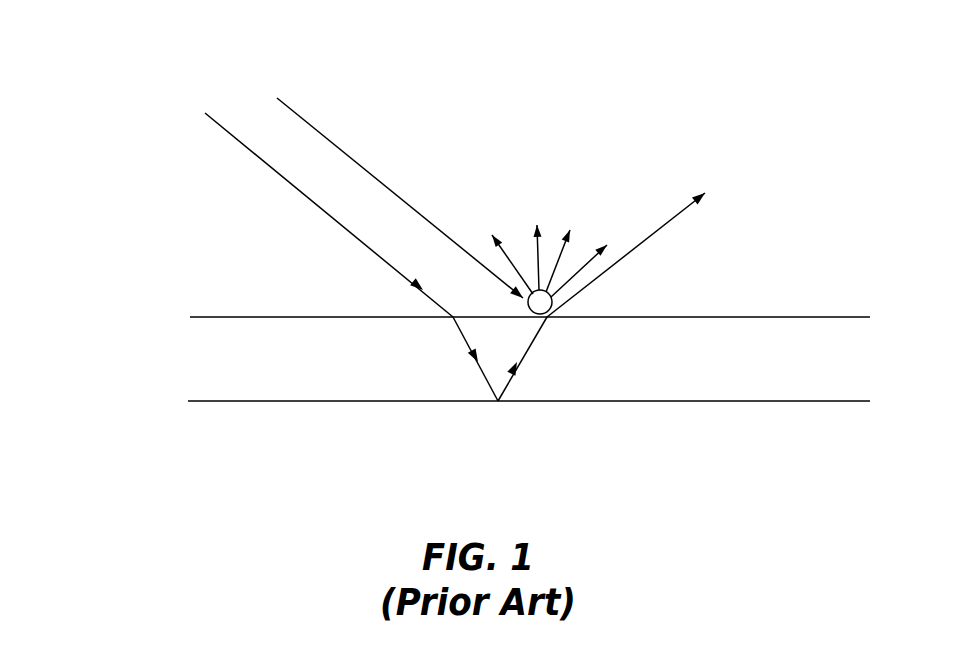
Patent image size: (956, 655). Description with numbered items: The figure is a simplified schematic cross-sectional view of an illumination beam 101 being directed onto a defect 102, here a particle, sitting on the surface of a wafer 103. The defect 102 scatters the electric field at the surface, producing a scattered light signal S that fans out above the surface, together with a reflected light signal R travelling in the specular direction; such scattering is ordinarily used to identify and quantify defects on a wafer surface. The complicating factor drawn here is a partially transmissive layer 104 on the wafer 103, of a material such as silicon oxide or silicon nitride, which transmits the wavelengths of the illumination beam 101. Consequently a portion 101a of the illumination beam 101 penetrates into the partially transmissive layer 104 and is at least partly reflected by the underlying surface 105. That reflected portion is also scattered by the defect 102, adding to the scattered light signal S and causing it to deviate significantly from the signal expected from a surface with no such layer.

The illumination beam 101 is at (277, 98).
The portion of the illumination beam 101a is at (490, 387).
The defect 102 is at (547, 317).
The wafer 103 is at (118, 357).
The partially transmissive layer 104 is at (842, 360).
The underlying surface 105 is at (210, 400).
The reflected light signal R is at (653, 233).
The scattered light signal S is at (615, 230).